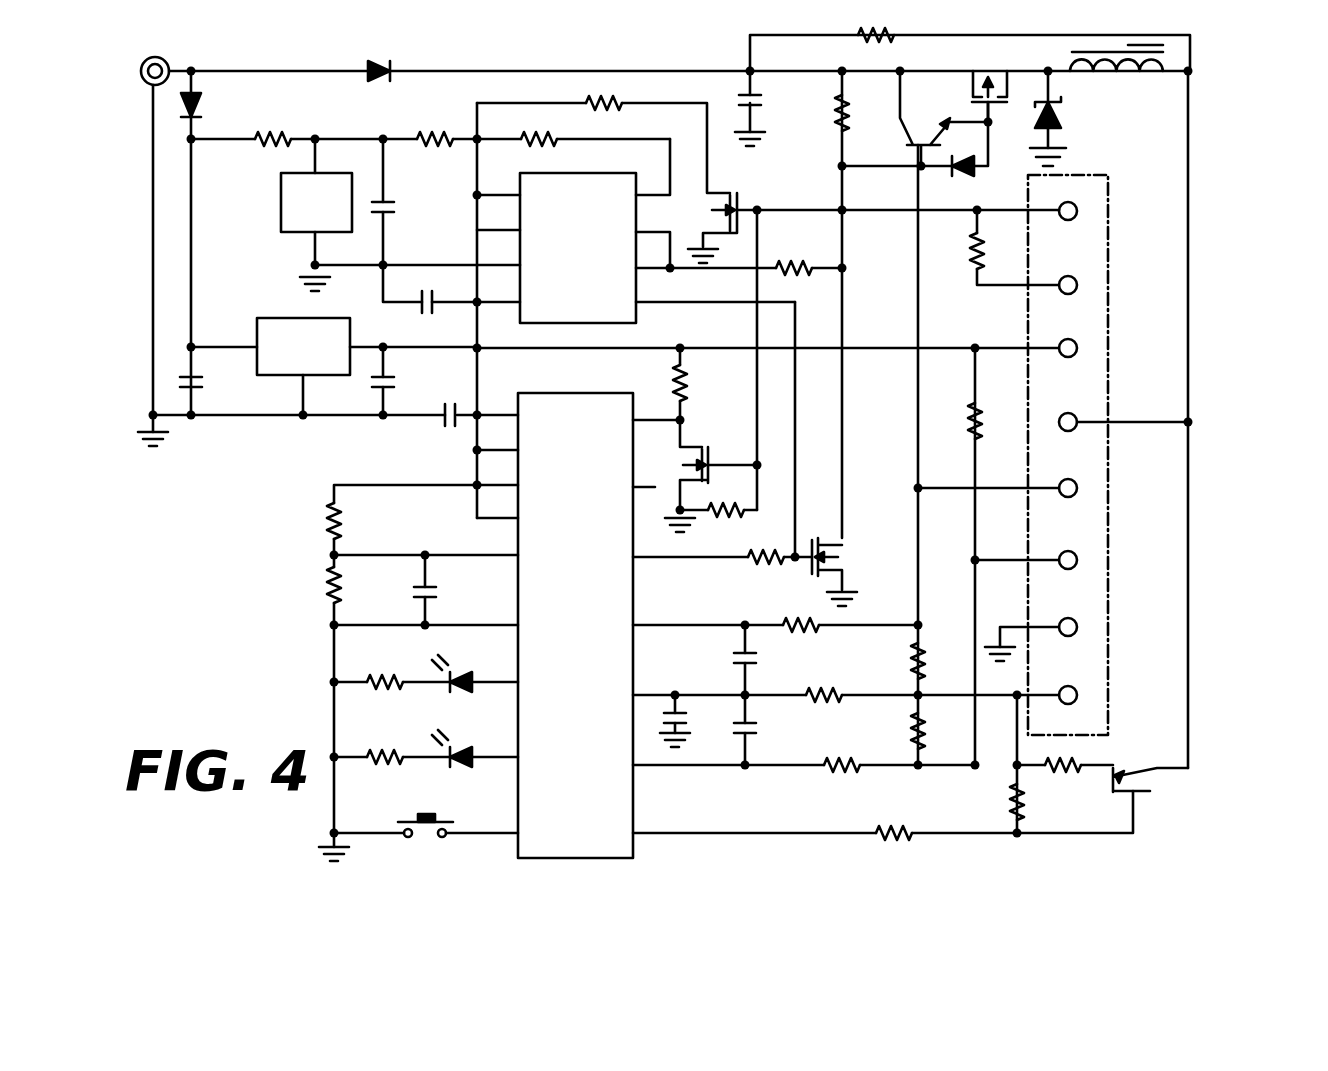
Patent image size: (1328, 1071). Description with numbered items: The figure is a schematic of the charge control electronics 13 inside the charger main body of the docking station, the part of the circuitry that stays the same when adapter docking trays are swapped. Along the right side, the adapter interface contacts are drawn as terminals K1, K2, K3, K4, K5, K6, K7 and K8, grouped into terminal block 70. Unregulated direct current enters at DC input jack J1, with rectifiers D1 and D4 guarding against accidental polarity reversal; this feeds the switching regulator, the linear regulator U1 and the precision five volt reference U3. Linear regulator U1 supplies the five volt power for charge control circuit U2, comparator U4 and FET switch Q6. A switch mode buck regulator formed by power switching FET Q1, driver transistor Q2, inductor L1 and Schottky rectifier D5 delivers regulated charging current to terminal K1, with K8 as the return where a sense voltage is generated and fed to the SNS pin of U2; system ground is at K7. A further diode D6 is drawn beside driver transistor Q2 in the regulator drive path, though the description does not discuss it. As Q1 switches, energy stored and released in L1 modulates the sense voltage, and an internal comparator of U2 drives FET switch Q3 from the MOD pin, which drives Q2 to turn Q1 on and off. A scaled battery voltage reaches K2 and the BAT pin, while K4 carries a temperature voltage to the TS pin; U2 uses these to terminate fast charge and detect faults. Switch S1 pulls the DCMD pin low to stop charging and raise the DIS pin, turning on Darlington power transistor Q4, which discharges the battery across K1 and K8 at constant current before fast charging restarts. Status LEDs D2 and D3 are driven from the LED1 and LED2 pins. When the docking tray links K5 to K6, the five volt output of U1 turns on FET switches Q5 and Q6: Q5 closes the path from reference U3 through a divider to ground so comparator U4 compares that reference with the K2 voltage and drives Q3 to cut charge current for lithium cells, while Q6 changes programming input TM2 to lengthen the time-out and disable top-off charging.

The charge control electronics 13 is at (220, 569).
The terminal block 70 is at (1108, 652).
The charge control circuit U2 is at (596, 589).
The comparator U4 is at (588, 251).
The linear regulator U1 is at (320, 342).
The precision 5 volt reference U3 is at (328, 197).
The power switching FET Q1 is at (989, 80).
The driver transistor Q2 is at (946, 121).
The FET switch Q3 is at (864, 569).
The Darlington power transistor Q4 is at (1142, 754).
The FET switch Q5 is at (753, 213).
The FET switch Q6 is at (715, 465).
The inductor L1 is at (1125, 44).
The DC input jack J1 is at (114, 56).
The discharge-before-charge switch S1 is at (424, 830).
The rectifier D1 is at (232, 103).
The status LED D2 is at (463, 679).
The status LED D3 is at (463, 755).
The rectifier D4 is at (364, 70).
The Schottky rectifier D5 is at (1065, 118).
The diode IN4148 D6 is at (972, 148).
The terminal K1(+) K1 is at (1114, 421).
The terminal K2 is at (1003, 490).
The terminal K3 is at (1067, 283).
The terminal K4 is at (1035, 564).
The terminal K5 is at (1066, 198).
The terminal K6 is at (1071, 348).
The terminal K7 is at (1034, 628).
The terminal K8(−) K8 is at (1007, 696).